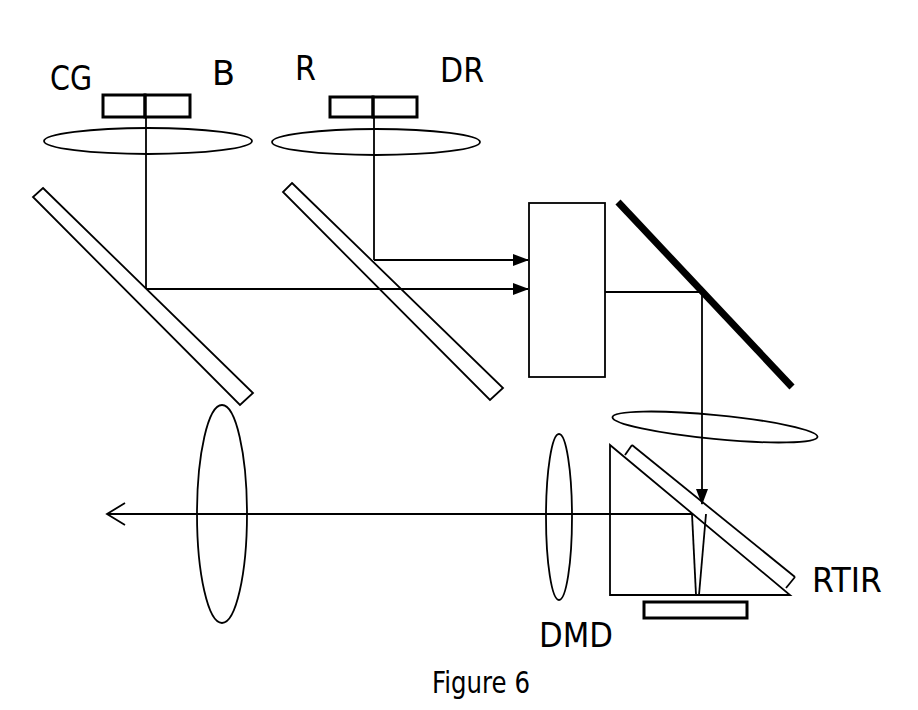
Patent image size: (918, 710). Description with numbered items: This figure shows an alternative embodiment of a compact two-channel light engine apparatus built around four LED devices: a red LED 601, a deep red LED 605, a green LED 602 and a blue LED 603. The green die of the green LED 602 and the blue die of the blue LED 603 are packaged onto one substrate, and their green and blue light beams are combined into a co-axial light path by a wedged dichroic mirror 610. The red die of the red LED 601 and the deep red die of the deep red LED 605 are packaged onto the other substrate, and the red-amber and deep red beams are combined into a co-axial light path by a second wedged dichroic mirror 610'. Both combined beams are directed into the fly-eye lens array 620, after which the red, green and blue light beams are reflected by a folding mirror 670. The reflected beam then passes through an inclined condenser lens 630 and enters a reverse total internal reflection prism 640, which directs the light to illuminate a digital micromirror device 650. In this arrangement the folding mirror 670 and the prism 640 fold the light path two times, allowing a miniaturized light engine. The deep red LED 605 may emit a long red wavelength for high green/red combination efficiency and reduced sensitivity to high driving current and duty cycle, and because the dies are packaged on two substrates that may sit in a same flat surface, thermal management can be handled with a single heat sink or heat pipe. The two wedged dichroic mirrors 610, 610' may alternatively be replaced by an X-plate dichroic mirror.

The red LED 601 is at (346, 96).
The green LED 602 is at (127, 95).
The blue LED 603 is at (172, 95).
The deep red LED 605 is at (418, 110).
The wedged dichroic mirror 610 is at (139, 296).
The wedged dichroic mirror 610' is at (370, 291).
The fly-eye lens array 620 is at (585, 202).
The inclined condenser lens 630 is at (820, 437).
The RTIR prism 640 is at (788, 590).
The DMD 650 is at (702, 618).
The folding mirror 670 is at (788, 365).